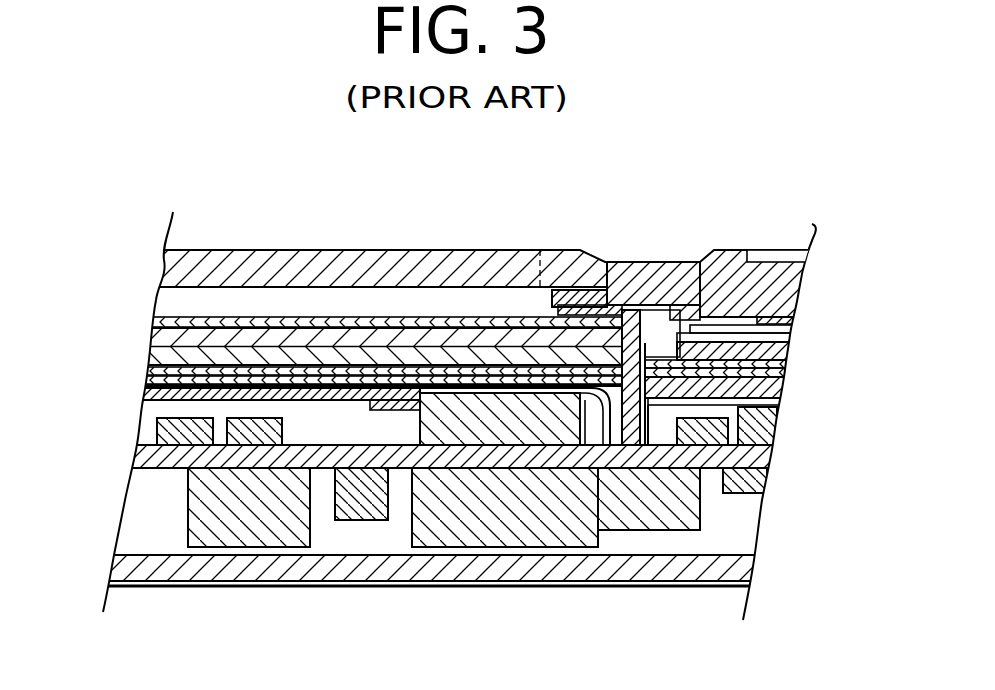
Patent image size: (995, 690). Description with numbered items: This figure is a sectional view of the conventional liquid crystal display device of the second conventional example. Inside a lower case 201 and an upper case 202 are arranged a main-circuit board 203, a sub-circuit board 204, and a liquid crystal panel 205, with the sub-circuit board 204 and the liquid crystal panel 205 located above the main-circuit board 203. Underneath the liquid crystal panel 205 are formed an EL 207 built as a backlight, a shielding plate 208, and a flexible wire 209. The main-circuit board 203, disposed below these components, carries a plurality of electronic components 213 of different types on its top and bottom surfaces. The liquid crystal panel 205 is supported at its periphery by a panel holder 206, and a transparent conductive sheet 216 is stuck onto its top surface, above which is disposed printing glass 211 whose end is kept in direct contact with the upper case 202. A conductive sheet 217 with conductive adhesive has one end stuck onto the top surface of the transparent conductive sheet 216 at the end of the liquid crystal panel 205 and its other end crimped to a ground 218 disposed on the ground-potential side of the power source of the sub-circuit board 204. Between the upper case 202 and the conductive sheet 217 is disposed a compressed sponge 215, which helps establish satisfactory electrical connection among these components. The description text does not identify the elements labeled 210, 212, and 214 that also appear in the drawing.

The lower case 201 is at (318, 570).
The upper case 202 is at (667, 278).
The main-circuit board 203 is at (403, 453).
The sub-circuit board 204 is at (792, 370).
The liquid crystal panel 205 is at (190, 350).
The panel holder 206 is at (787, 392).
The EL 207 is at (160, 380).
The shielding plate 208 is at (525, 388).
The flexible wire 209 is at (142, 397).
The sealing member 210 is at (770, 273).
The printing glass 211 is at (286, 270).
The thin film transistor 212 is at (478, 427).
The electronic components 213 is at (170, 432).
The conductive layer 214 is at (793, 312).
The compressed sponge 215 is at (583, 292).
The transparent conductive sheet 216 is at (367, 313).
The conductive sheet with conductive adhesive 217 is at (620, 305).
The ground 218 is at (793, 350).